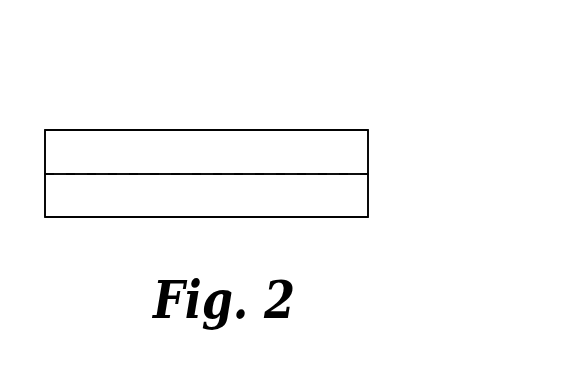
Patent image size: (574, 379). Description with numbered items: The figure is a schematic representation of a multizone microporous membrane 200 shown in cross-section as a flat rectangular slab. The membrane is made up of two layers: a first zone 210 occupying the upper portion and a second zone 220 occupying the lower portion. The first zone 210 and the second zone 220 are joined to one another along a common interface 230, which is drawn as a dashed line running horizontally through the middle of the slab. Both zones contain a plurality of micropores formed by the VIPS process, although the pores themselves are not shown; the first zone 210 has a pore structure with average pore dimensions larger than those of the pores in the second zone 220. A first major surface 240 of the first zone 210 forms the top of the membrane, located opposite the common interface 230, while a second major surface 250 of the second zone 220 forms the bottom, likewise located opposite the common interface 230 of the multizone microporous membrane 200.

The multizone microporous membrane 200 is at (368, 98).
The first zone 210 is at (358, 146).
The second zone 220 is at (358, 199).
The common interface 230 is at (259, 174).
The first major surface 240 is at (143, 130).
The second major surface 250 is at (100, 217).